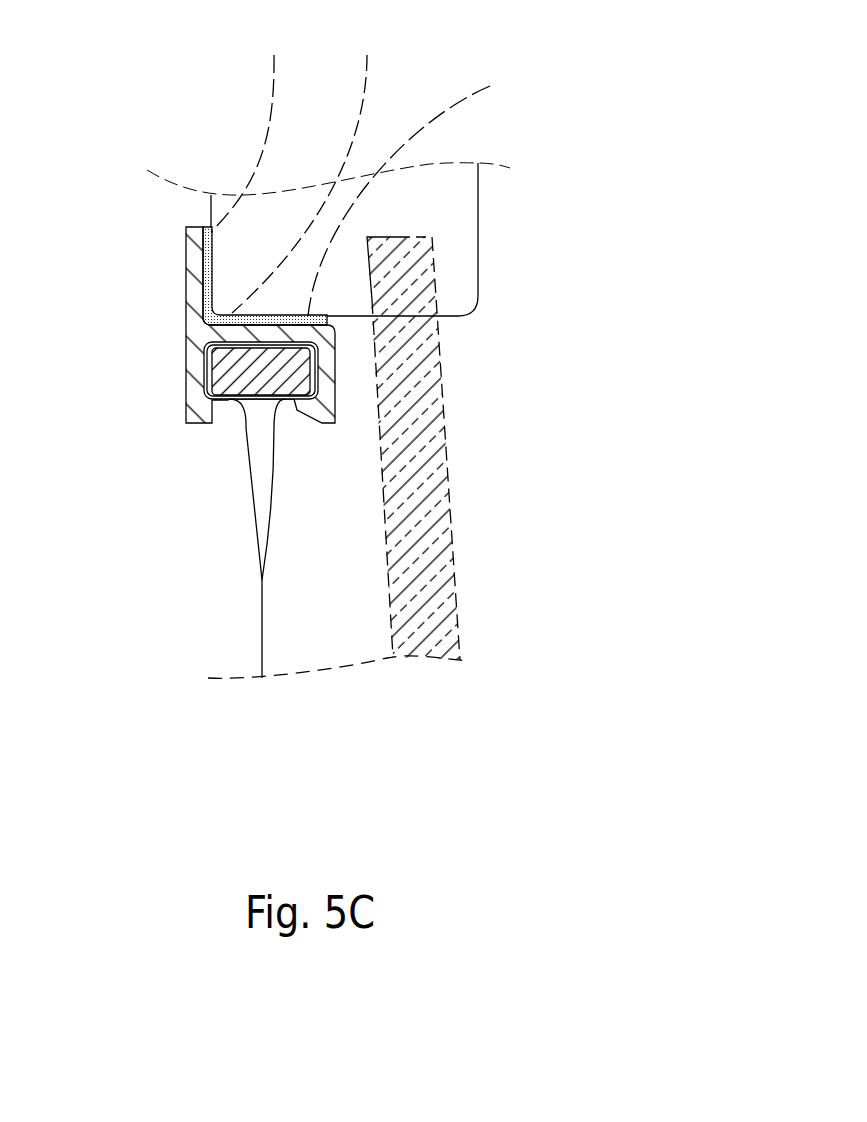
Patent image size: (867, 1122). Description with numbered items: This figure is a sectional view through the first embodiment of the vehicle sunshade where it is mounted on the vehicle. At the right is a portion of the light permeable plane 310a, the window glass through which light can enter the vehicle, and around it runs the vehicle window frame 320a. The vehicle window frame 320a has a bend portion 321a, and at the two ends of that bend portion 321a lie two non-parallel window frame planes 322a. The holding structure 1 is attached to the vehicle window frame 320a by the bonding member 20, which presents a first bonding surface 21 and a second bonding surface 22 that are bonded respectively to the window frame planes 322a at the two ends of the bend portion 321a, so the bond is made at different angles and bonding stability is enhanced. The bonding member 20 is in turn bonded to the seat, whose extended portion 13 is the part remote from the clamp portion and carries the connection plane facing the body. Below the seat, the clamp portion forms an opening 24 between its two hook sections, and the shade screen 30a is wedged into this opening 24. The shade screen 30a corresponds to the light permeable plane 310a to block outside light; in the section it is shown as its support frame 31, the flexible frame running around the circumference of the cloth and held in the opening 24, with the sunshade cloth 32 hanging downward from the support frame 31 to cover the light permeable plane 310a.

The holding structure 1 is at (176, 229).
The extended portion 13 is at (187, 237).
The bonding member 20 is at (194, 303).
The first bonding surface 21 is at (204, 343).
The second bonding surface 22 is at (187, 281).
The opening 24 is at (235, 410).
The shade screen 30a is at (281, 498).
The seal head 31 is at (236, 385).
The sealing strip 32 is at (251, 492).
The light permeable plane 310a is at (388, 553).
The vehicle window frame 320a is at (484, 222).
The bend portion 321a is at (315, 162).
The window frame planes 322a is at (383, 164).